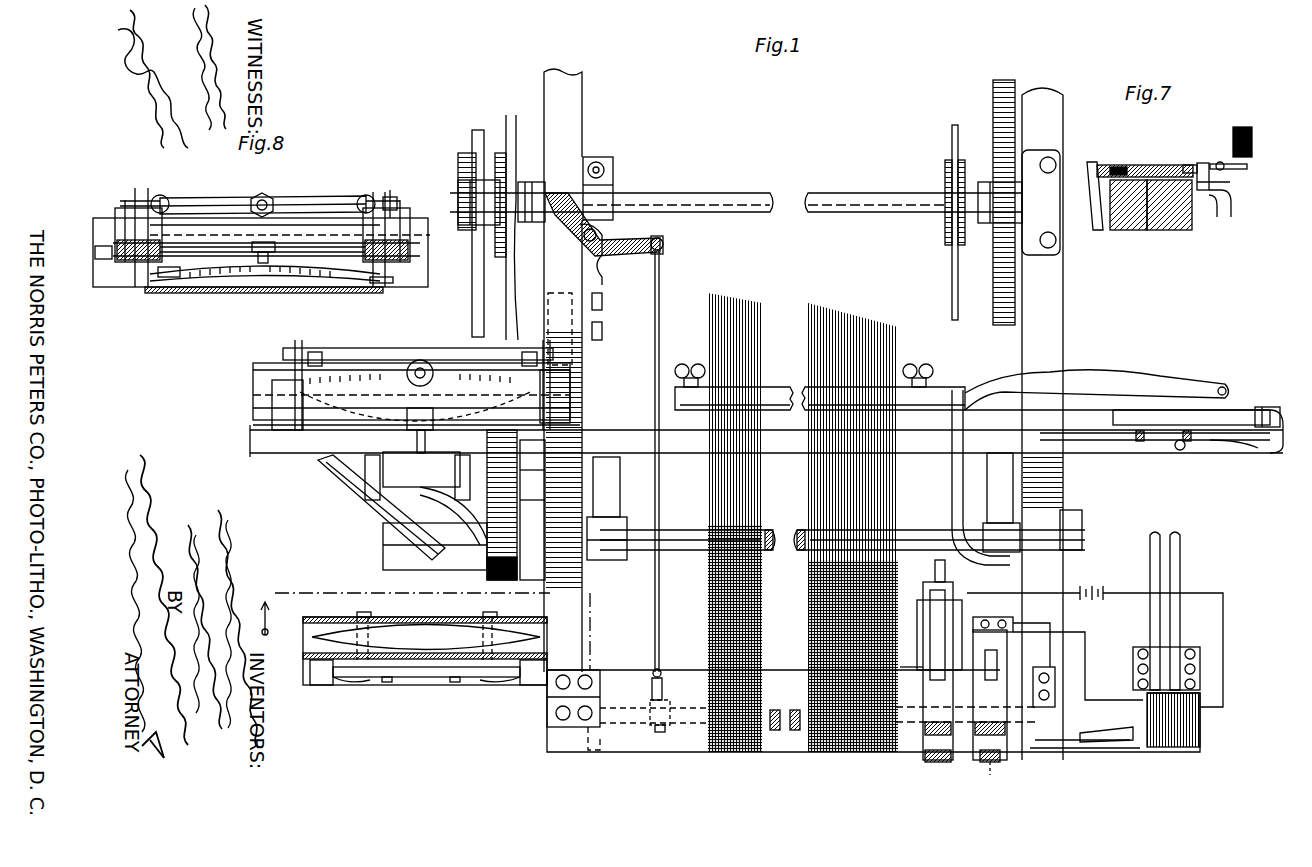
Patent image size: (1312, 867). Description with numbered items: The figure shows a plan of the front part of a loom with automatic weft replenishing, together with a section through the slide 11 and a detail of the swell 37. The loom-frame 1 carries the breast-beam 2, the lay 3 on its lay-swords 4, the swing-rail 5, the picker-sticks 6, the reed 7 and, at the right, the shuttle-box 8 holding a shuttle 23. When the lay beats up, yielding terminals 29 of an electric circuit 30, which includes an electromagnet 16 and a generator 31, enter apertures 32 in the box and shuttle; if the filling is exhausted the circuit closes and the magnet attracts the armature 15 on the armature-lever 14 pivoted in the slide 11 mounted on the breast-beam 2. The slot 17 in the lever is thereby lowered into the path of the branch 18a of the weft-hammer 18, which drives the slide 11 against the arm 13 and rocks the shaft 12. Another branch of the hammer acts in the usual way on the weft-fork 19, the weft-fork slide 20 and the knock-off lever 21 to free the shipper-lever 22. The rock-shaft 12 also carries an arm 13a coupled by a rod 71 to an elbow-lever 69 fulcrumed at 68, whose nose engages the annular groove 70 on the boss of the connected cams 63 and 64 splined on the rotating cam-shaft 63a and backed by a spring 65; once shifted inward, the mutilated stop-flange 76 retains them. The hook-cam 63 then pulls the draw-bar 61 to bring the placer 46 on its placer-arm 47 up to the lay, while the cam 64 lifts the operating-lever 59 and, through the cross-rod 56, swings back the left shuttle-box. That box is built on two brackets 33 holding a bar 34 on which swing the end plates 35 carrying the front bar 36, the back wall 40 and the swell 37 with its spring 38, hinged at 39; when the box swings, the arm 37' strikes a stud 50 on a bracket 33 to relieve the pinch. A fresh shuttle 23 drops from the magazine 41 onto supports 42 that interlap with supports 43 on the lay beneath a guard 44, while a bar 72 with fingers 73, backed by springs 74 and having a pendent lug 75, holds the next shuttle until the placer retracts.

In FIG. 1, the loom-frame 1 is at (560, 96).
In FIG. 7, the breast-beam 2 is at (1180, 228).
In FIG. 1, the breast-beam 2 is at (680, 678).
In FIG. 8, the lay 3 is at (112, 286).
In FIG. 1, the lay 3 is at (766, 433).
In FIG. 1, the lay-swords 4 is at (612, 508).
In FIG. 1, the swing-rail 5 is at (905, 538).
In FIG. 1, the picker-sticks 6 is at (1278, 418).
In FIG. 1, the reed 7 is at (820, 387).
In FIG. 1, the shuttle-box 8 is at (1112, 380).
In FIG. 7, the slide 11 is at (1140, 228).
In FIG. 1, the slide 11 is at (990, 696).
In FIG. 1, the rock-shaft 12 is at (796, 732).
In FIG. 7, the arm 13 is at (1089, 170).
In FIG. 1, the arm 13 is at (1000, 763).
In FIG. 1, the arm 13a is at (650, 698).
In FIG. 7, the armature-lever 14 is at (1188, 165).
In FIG. 7, the armature 15 is at (1248, 166).
In FIG. 7, the electromagnet 16 is at (1252, 142).
In FIG. 1, the electromagnet 16 is at (995, 619).
In FIG. 7, the slot 17 is at (1204, 163).
In FIG. 7, the weft-hammer 18 is at (1228, 212).
In FIG. 1, the weft-hammer 18 is at (955, 474).
In FIG. 7, the branch of weft-hammer 18a is at (1230, 183).
In FIG. 1, the weft-fork 19 is at (935, 572).
In FIG. 1, the weft-fork slide 20 is at (965, 672).
In FIG. 7, the knock-off lever 21 is at (1122, 166).
In FIG. 1, the knock-off lever 21 is at (1060, 745).
In FIG. 1, the shipper-lever 22 is at (1100, 733).
In FIG. 1, the shuttle 23 is at (405, 628).
In FIG. 1, the yielding terminals 29 is at (1162, 555).
In FIG. 1, the electric circuit 30 is at (1127, 594).
In FIG. 1, the generator 31 is at (1097, 581).
In FIG. 1, the apertures 32 is at (1165, 442).
In FIG. 8, the brackets 33 is at (128, 210).
In FIG. 1, the brackets 33 is at (272, 394).
In FIG. 8, the bar 34 is at (330, 257).
In FIG. 1, the bar 34 is at (345, 432).
In FIG. 8, the end plates 35 is at (162, 196).
In FIG. 1, the end plates 35 is at (292, 350).
In FIG. 8, the front bar 36 is at (163, 292).
In FIG. 8, the swell 37 is at (234, 284).
In FIG. 8, the projecting arm 37' is at (396, 294).
In FIG. 8, the spring 38 is at (250, 280).
In FIG. 8, the hinge 39 is at (160, 275).
In FIG. 8, the back wall 40 is at (205, 226).
In FIG. 1, the magazine 41 is at (342, 627).
In FIG. 1, the supports 42 is at (372, 614).
In FIG. 1, the supports 43 is at (380, 470).
In FIG. 1, the guard 44 is at (421, 469).
In FIG. 1, the placer 46 is at (370, 448).
In FIG. 1, the placer-arm 47 is at (435, 513).
In FIG. 8, the stud 50 is at (388, 198).
In FIG. 8, the cross-rod 56 is at (240, 200).
In FIG. 1, the cross-rod 56 is at (400, 356).
In FIG. 1, the operating-lever 59 is at (512, 285).
In FIG. 1, the draw-bar 61 is at (476, 324).
In FIG. 1, the hook-cam 63 is at (460, 170).
In FIG. 1, the cam-shaft 63a is at (700, 204).
In FIG. 1, the cam 64 is at (500, 150).
In FIG. 1, the spring 65 is at (566, 188).
In FIG. 1, the fulcrum 68 is at (602, 266).
In FIG. 1, the elbow-lever 69 is at (618, 246).
In FIG. 1, the annular groove 70 is at (528, 182).
In FIG. 1, the rod 71 is at (655, 326).
In FIG. 1, the bar 72 is at (420, 680).
In FIG. 1, the fingers 73 is at (308, 655).
In FIG. 1, the springs 74 is at (350, 684).
In FIG. 1, the pendent lug 75 is at (388, 684).
In FIG. 1, the mutilated stop-flange 76 is at (569, 241).